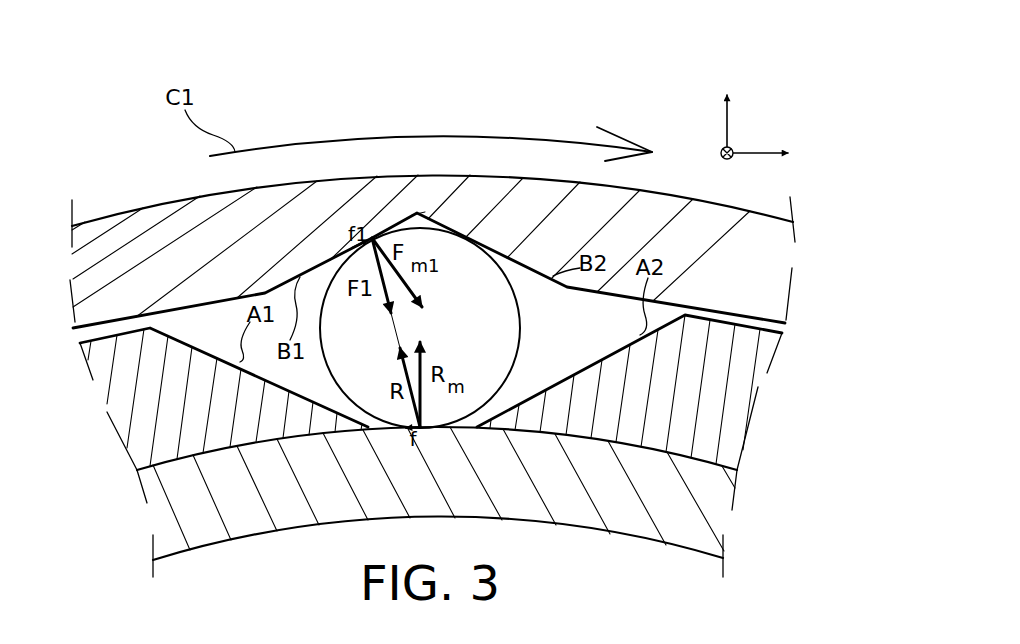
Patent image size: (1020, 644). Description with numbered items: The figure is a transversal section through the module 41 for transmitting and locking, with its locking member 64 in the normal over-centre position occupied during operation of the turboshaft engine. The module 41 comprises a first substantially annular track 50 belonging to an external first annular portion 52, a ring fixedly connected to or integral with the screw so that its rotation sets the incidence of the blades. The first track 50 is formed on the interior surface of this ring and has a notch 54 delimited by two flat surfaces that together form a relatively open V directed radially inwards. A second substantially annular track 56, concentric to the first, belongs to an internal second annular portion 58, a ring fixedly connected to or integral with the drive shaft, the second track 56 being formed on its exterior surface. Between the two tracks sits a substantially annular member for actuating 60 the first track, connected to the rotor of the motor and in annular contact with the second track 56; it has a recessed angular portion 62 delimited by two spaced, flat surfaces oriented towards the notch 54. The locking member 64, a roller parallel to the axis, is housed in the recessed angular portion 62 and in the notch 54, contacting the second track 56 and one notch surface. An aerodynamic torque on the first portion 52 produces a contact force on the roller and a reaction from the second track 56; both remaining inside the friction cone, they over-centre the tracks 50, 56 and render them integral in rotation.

The module for transmitting and locking 41 is at (692, 84).
The first annular track 50 is at (412, 392).
The first annular portion 52 is at (432, 236).
The notch 54 is at (425, 215).
The second annular track 56 is at (354, 424).
The second annular portion 58 is at (560, 519).
The member for actuating the first track 60 is at (143, 427).
The recessed angular portion 62 is at (565, 348).
The locking member 64 is at (494, 274).